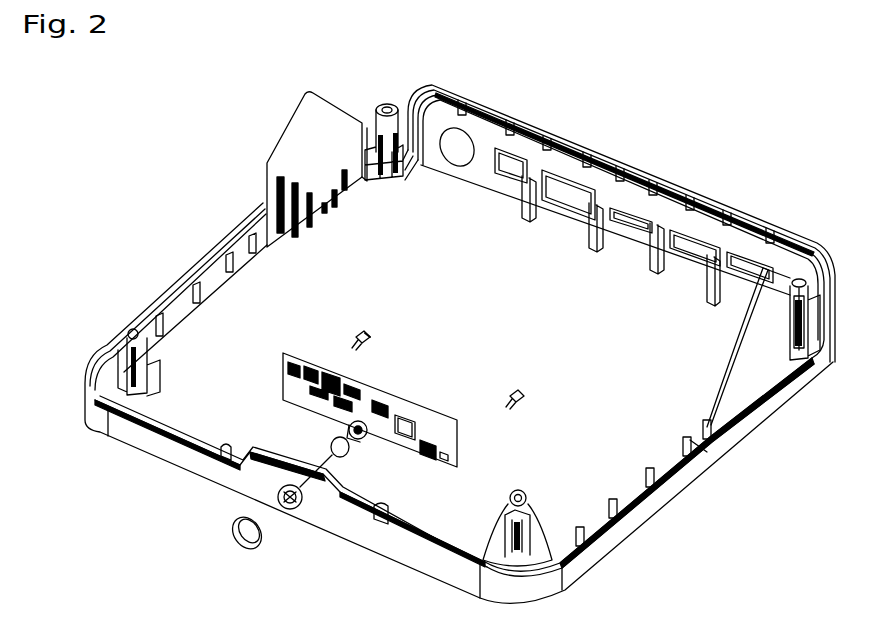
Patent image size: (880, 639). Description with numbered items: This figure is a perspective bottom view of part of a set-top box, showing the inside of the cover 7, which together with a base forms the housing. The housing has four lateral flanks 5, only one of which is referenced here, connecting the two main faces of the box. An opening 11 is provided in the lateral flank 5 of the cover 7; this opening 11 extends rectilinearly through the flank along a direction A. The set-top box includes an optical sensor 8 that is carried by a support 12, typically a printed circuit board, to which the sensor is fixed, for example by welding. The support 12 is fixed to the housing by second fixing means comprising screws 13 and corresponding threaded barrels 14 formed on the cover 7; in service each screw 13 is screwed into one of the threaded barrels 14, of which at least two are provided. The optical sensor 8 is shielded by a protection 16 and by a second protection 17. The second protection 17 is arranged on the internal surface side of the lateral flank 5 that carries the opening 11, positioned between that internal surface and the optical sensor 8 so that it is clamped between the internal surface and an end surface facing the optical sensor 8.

The lateral flank 5 is at (458, 573).
The cover 7 is at (667, 489).
The optical sensor 8 is at (368, 440).
The opening 11 is at (296, 512).
The support 12 is at (285, 368).
The screw 13 is at (364, 348).
The threaded barrel 14 is at (224, 458).
The protection 16 is at (243, 546).
The second protection 17 is at (331, 438).
The direction A is at (266, 514).